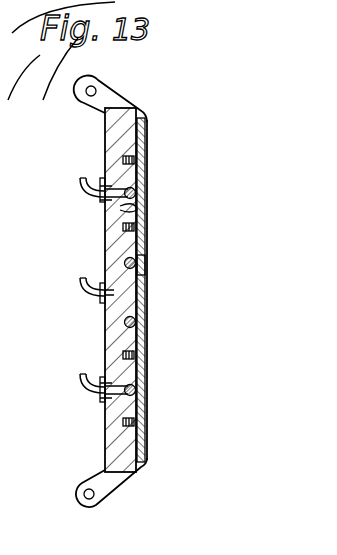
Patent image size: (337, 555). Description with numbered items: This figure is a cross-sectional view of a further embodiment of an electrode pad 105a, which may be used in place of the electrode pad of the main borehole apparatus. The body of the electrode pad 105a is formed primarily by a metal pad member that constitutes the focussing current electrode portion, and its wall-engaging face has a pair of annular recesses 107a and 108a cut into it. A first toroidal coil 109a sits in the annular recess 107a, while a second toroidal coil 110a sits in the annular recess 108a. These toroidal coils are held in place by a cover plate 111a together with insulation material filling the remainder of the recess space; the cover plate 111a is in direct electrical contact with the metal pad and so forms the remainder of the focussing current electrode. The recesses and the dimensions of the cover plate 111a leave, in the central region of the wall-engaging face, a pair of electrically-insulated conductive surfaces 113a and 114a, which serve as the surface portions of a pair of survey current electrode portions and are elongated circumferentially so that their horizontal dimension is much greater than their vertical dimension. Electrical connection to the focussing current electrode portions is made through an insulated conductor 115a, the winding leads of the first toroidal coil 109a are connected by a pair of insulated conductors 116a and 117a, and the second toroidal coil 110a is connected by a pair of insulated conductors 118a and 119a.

The electrode pad 105a is at (150, 462).
The annular recess 107a is at (147, 214).
The annular recess 108a is at (147, 385).
The first toroidal coil 109a is at (147, 270).
The second toroidal coil 110a is at (147, 318).
The cover plate 111a is at (147, 408).
The electrically-insulated conductive surface 113a is at (147, 250).
The electrically-insulated conductive surface 114a is at (147, 341).
The insulated conductor 115a is at (82, 276).
The insulated conductor 116a is at (83, 176).
The insulated conductor 117a is at (83, 176).
The insulated conductor 118a is at (83, 372).
The insulated conductor 119a is at (83, 372).